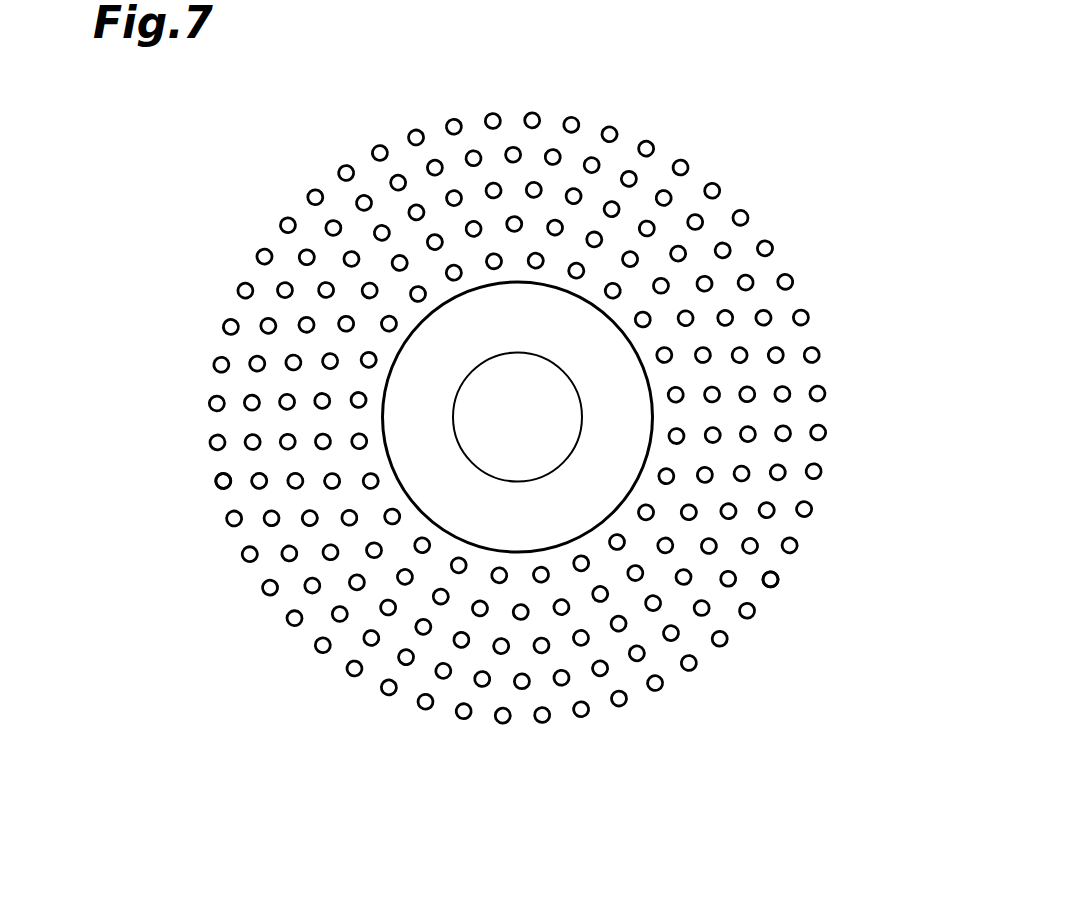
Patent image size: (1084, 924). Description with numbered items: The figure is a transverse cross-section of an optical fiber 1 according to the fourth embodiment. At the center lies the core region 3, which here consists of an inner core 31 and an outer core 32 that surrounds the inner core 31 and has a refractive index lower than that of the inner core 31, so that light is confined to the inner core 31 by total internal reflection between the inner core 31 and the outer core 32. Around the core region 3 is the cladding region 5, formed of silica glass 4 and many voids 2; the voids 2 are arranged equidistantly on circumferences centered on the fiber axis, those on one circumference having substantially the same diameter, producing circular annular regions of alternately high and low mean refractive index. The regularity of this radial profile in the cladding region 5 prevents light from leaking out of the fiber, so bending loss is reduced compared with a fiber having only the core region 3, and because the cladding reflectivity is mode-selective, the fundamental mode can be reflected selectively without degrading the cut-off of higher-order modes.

The optical fiber 1 is at (647, 746).
The voids 2 is at (778, 578).
The core region 3 is at (890, 270).
The inner core 31 is at (555, 414).
The outer core 32 is at (603, 362).
The silica glass 4 is at (717, 225).
The cladding region 5 is at (223, 502).